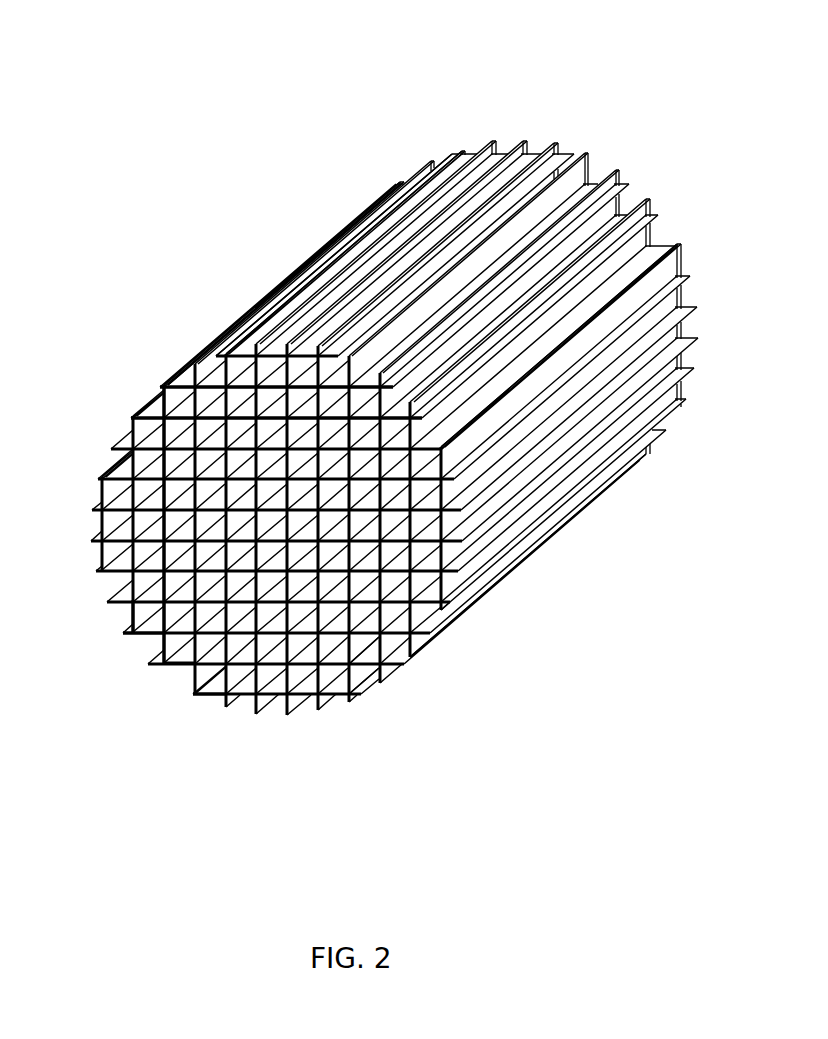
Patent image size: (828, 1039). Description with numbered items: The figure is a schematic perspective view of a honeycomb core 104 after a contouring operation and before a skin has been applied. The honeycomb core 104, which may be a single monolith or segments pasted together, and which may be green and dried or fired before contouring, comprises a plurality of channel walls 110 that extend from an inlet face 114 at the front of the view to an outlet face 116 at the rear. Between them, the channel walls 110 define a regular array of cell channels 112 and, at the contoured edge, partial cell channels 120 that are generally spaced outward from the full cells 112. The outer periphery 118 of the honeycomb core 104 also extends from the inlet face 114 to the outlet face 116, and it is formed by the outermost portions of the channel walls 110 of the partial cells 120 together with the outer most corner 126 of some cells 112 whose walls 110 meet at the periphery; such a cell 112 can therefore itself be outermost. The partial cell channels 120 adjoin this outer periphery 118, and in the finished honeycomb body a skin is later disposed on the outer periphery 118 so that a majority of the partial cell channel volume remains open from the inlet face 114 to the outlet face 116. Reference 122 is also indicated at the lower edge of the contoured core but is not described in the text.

The honeycomb core 104 is at (354, 53).
The channel walls 110 is at (183, 383).
The cell channels 112 is at (150, 400).
The inlet face 114 is at (375, 657).
The outlet face 116 is at (665, 204).
The outer periphery 118 is at (343, 232).
The partial cell channels 120 is at (143, 648).
The plate end portion 122 is at (186, 691).
The outer most corner 126 is at (161, 381).